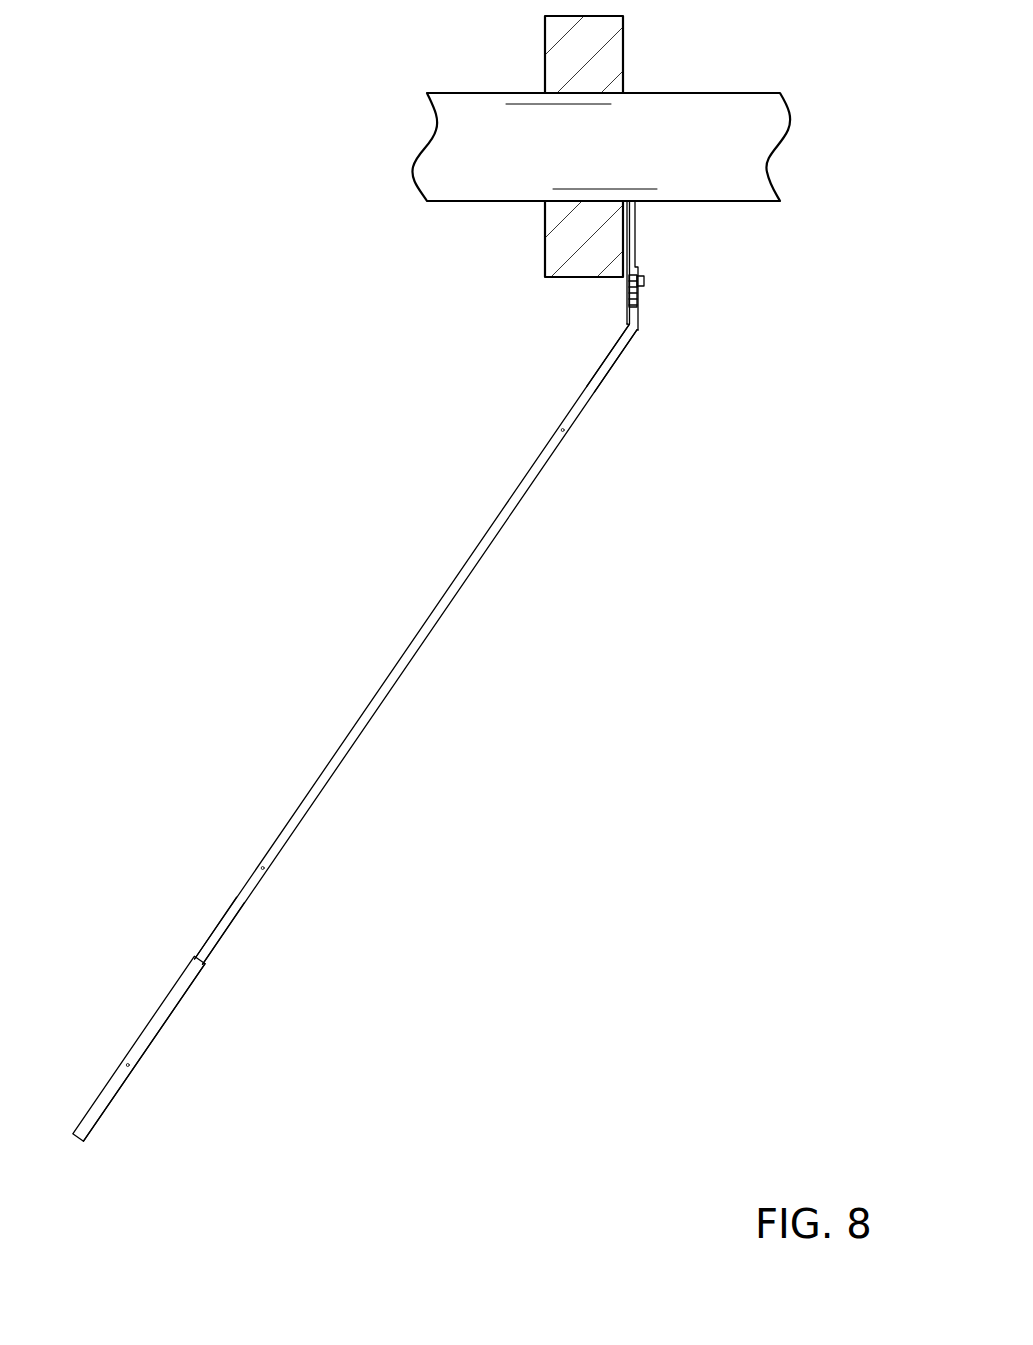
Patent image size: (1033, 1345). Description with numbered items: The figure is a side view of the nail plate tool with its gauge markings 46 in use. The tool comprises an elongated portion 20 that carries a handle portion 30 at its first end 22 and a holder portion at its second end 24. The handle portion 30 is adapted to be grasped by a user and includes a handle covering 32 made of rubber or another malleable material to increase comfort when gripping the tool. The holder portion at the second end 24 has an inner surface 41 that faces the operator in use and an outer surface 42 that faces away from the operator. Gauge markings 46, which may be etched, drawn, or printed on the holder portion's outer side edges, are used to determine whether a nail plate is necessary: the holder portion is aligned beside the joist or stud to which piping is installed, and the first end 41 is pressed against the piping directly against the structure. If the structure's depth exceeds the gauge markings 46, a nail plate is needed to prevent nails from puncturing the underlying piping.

The elongated portion 20 is at (414, 638).
The first end 22 is at (620, 325).
The second end 24 is at (201, 950).
The handle portion 30 is at (134, 1046).
The handle covering 32 is at (152, 1031).
The inner surface 41 is at (623, 230).
The outer surface 42 is at (636, 246).
The gauge markings 46 is at (641, 282).